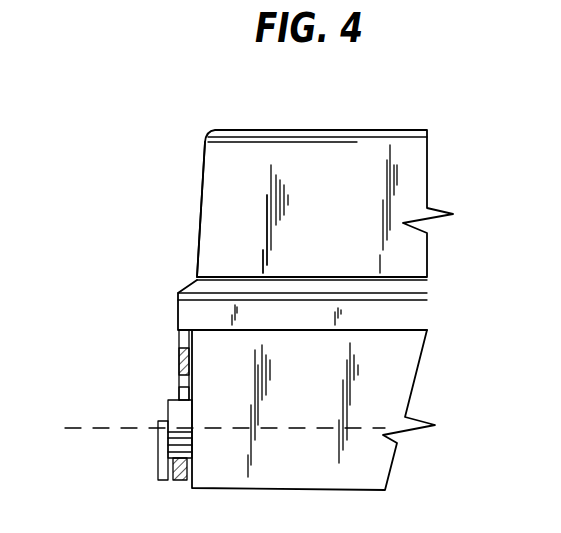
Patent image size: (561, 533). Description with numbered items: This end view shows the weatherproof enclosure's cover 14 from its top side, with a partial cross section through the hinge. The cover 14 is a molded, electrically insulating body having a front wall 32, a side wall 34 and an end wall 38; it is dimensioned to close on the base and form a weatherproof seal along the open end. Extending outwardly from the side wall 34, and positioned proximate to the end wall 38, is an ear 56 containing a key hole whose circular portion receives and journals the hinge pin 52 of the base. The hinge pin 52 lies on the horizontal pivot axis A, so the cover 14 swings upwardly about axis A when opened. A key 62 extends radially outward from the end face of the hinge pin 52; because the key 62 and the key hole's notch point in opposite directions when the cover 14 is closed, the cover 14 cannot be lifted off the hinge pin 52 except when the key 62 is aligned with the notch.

The cover 14 is at (404, 130).
The front wall 32 is at (320, 128).
The end wall 38 is at (233, 197).
The side wall 34 is at (200, 240).
The ear 56 is at (177, 338).
The hinge pin 52 is at (173, 402).
The key 62 is at (158, 458).
The pivot axis A is at (215, 427).